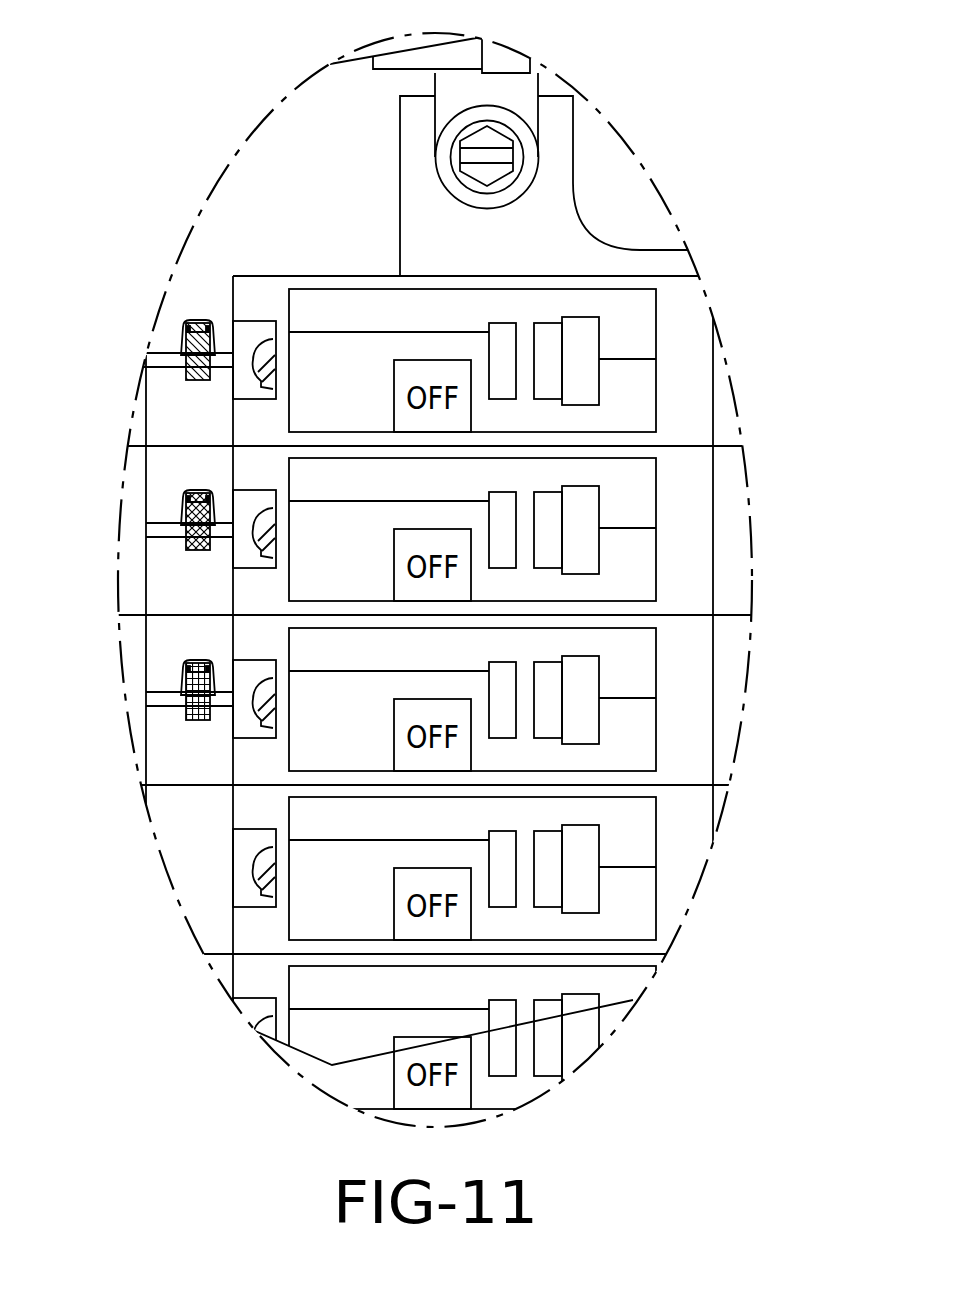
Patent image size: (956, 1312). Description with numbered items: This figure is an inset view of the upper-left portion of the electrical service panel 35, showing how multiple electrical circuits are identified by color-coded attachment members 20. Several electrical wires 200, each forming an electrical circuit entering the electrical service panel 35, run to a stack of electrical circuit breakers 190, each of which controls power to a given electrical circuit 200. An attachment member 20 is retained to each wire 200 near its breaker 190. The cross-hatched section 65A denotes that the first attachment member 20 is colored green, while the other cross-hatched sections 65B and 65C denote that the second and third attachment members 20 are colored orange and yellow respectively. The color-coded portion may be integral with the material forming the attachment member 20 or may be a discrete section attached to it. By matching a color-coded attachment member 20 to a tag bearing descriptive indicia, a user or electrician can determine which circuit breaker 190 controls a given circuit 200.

The electrical service panel 35 is at (296, 174).
The attachment member 20 is at (172, 338).
The electrical wire 200 is at (165, 363).
The electrical circuit breaker 190 is at (622, 347).
The cross-hatched section 65A is at (202, 325).
The cross-hatched section 65B is at (202, 495).
The cross-hatched section 65C is at (202, 665).